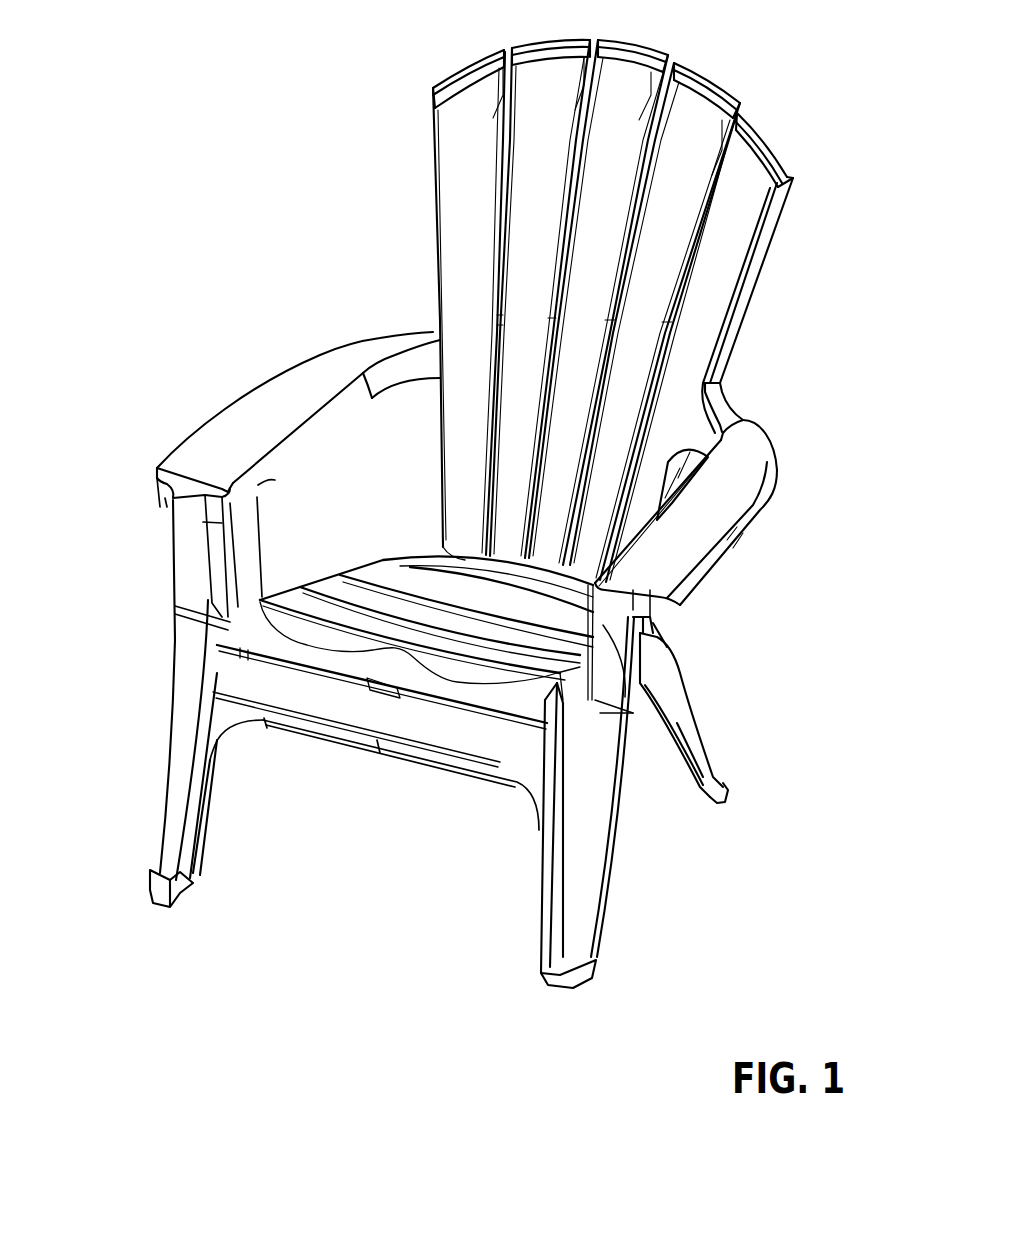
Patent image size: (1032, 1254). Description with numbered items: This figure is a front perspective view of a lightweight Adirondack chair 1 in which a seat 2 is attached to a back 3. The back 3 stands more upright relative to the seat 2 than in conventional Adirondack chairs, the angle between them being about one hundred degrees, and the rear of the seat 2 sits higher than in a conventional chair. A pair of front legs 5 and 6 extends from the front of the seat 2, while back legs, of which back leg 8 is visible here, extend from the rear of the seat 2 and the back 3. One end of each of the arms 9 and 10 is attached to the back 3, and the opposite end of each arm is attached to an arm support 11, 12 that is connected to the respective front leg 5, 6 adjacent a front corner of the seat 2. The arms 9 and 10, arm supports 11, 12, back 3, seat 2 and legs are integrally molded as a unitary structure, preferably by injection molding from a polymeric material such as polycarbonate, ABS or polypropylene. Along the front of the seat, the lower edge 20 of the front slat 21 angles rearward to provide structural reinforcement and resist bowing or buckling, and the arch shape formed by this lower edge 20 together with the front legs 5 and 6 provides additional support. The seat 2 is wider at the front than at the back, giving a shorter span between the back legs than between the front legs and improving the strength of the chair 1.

The Adirondack chair 1 is at (356, 163).
The seat 2 is at (378, 577).
The back 3 is at (703, 90).
The front leg 5 is at (162, 820).
The front leg 6 is at (617, 870).
The back leg 8 is at (667, 680).
The arm 9 is at (290, 378).
The arm 10 is at (753, 457).
The arm support 11 is at (187, 583).
The arm support 12 is at (607, 677).
The lower edge 20 is at (438, 767).
The front slat 21 is at (332, 707).